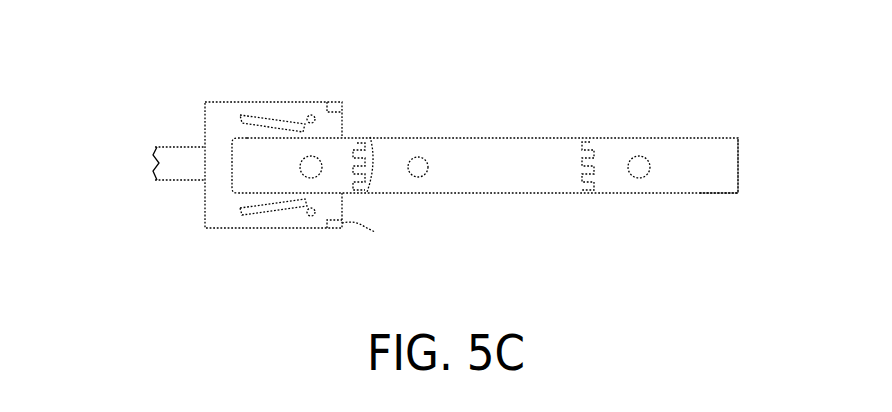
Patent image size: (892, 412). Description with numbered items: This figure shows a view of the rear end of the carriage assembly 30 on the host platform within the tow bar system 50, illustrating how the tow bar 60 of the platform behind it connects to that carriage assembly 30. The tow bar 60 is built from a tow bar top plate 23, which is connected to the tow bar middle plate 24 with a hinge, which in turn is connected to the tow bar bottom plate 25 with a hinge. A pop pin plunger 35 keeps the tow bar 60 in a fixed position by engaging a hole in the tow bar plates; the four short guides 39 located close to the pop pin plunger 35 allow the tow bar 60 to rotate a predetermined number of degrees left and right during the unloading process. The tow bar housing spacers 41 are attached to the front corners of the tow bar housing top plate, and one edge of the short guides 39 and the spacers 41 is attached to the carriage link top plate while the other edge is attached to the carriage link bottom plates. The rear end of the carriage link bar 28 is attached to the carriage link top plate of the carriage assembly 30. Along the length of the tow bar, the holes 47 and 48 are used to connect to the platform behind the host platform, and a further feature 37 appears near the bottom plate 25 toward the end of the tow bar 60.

The tow bar system 50 is at (132, 100).
The carriage assembly 30 is at (166, 213).
The carriage link bar 28 is at (178, 158).
The tow bar top plate 23 is at (247, 147).
The tow bar middle plate 24 is at (505, 160).
The short guides 39 is at (288, 197).
The pop pin plunger 35 is at (312, 167).
The tow bar housing spacers 41 is at (342, 110).
The hole 47 is at (418, 167).
The hole 48 is at (640, 160).
The tow bar bottom plate 25 is at (708, 152).
The slot 37 is at (680, 167).
The tow bar 60 is at (717, 178).